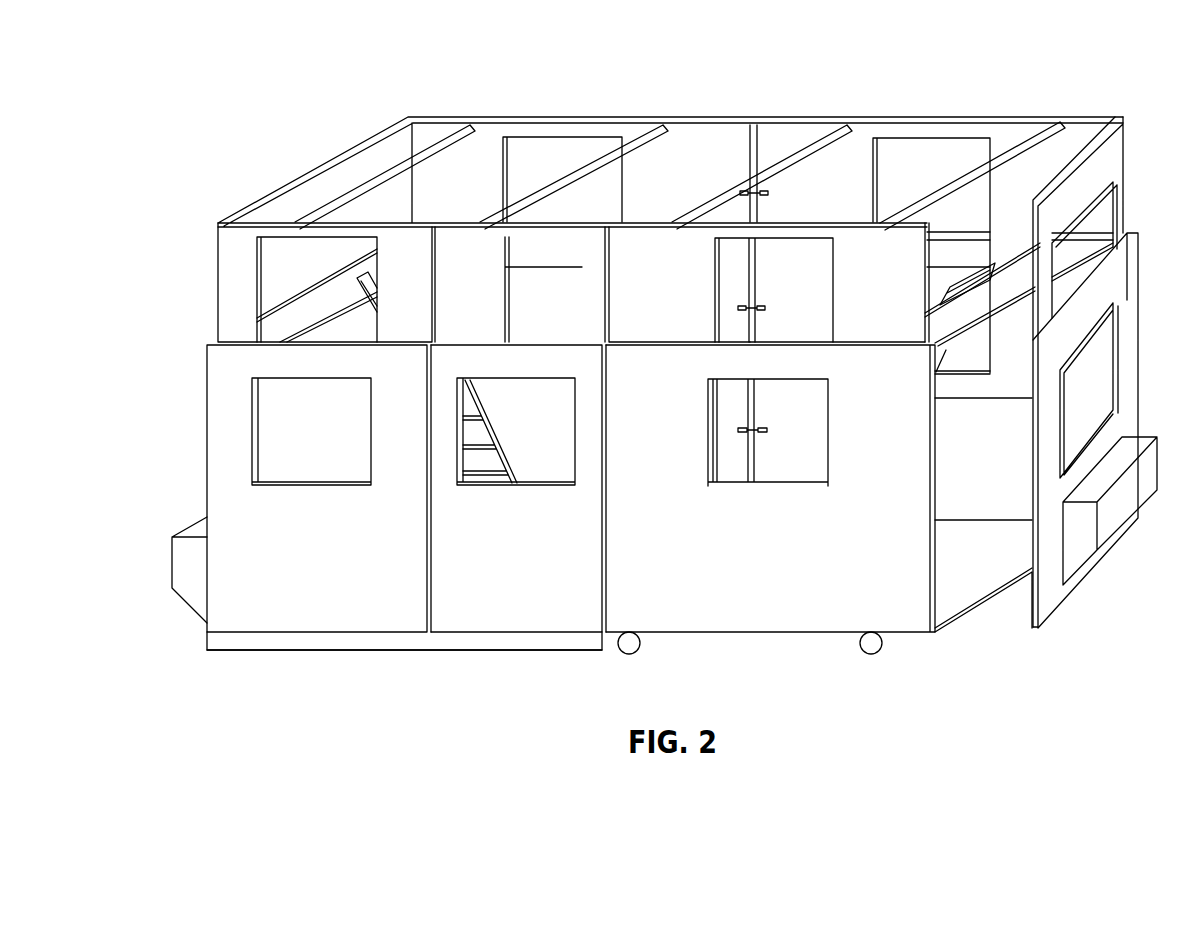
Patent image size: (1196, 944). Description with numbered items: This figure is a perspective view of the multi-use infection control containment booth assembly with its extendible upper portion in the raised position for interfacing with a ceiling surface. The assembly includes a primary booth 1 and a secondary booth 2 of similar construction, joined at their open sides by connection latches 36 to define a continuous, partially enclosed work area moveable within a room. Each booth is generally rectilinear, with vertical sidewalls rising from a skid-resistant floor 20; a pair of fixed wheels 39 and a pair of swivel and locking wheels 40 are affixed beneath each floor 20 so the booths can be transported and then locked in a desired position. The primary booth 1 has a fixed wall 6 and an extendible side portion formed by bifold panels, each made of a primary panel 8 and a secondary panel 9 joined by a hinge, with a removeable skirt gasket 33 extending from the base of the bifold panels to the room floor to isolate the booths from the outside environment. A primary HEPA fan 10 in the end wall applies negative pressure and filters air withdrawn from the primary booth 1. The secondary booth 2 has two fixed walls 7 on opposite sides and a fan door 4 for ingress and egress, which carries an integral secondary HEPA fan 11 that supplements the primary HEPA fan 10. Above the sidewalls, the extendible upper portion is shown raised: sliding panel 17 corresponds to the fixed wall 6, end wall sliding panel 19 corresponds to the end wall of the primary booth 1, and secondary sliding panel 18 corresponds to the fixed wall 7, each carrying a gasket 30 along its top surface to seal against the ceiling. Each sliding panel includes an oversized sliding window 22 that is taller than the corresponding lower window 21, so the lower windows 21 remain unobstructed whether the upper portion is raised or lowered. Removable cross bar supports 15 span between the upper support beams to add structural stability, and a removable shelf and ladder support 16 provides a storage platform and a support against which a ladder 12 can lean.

The primary booth 1 is at (447, 652).
The secondary booth 2 is at (790, 637).
The fan door 4 is at (1101, 300).
The fixed wall 6 is at (545, 425).
The fixed wall 7 is at (774, 567).
The primary panel 8 is at (489, 570).
The secondary panel 9 is at (308, 567).
The primary HEPA fan 10 is at (183, 603).
The secondary HEPA fan 11 is at (1117, 516).
The ladder 12 is at (373, 283).
The removable cross bar support 15 is at (643, 128).
The removable shelf and ladder support 16 is at (277, 322).
The sliding panel 17 is at (664, 168).
The secondary sliding panel 18 is at (821, 160).
The end wall sliding panel 19 is at (271, 280).
The floor 20 is at (952, 551).
The lower window 21 is at (302, 430).
The sliding window 22 is at (534, 290).
The gasket 30 is at (694, 108).
The removeable skirt gasket 33 is at (343, 652).
The connection latch 36 is at (767, 308).
The fixed wheel 39 is at (633, 654).
The swivel and locking wheel 40 is at (882, 648).